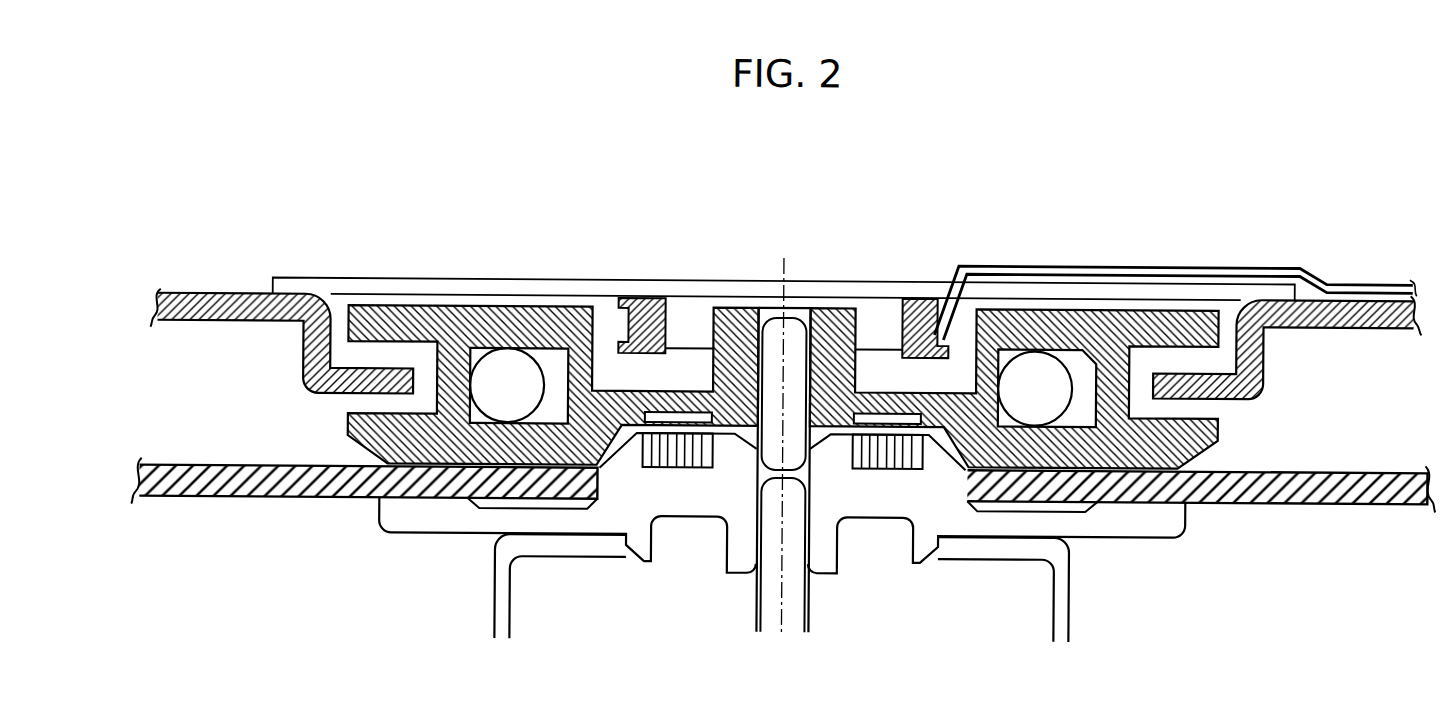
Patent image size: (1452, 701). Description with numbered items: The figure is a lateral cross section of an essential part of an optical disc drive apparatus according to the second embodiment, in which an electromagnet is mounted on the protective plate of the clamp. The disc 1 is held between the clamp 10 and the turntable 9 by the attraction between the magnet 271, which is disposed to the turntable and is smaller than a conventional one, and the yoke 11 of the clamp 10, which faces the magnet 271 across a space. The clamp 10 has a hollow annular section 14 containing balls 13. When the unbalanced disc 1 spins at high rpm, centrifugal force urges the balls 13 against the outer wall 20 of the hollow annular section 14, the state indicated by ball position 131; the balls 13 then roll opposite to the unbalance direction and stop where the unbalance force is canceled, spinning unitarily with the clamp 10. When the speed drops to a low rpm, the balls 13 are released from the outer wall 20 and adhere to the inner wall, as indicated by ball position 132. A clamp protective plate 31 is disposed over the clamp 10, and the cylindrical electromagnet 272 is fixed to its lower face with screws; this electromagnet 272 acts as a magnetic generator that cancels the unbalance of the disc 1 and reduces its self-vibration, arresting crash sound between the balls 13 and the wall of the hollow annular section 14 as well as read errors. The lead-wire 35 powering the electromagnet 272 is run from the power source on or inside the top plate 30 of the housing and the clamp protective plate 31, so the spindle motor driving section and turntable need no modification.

The disc 1 is at (220, 504).
The turntable 9 is at (1162, 528).
The clamp 10 is at (403, 325).
The yoke 11 is at (685, 418).
The balls 13 is at (764, 315).
The ball position 131 is at (505, 386).
The ball position 132 is at (1037, 381).
The hollow annular section 14 is at (560, 377).
The outer wall 20 is at (1095, 407).
The magnet 271 is at (878, 458).
The electromagnet 272 is at (920, 325).
The top plate 30 is at (1362, 304).
The clamp protective plate 31 is at (1242, 292).
The lead-wire 35 is at (1157, 262).